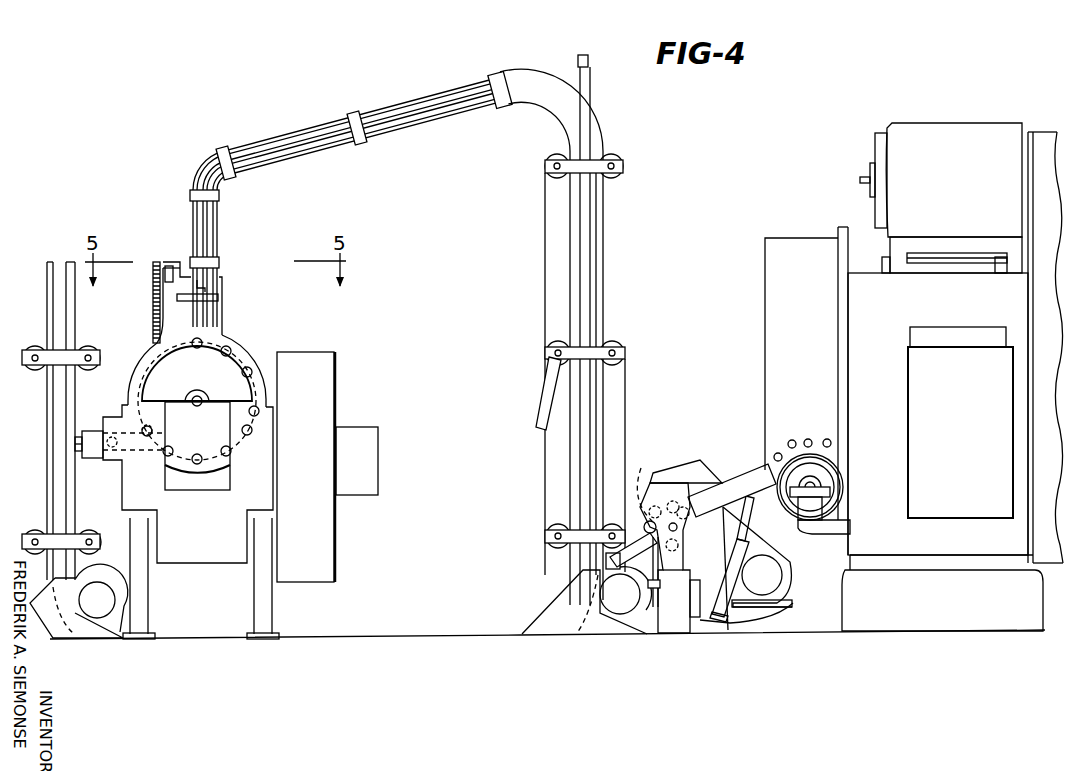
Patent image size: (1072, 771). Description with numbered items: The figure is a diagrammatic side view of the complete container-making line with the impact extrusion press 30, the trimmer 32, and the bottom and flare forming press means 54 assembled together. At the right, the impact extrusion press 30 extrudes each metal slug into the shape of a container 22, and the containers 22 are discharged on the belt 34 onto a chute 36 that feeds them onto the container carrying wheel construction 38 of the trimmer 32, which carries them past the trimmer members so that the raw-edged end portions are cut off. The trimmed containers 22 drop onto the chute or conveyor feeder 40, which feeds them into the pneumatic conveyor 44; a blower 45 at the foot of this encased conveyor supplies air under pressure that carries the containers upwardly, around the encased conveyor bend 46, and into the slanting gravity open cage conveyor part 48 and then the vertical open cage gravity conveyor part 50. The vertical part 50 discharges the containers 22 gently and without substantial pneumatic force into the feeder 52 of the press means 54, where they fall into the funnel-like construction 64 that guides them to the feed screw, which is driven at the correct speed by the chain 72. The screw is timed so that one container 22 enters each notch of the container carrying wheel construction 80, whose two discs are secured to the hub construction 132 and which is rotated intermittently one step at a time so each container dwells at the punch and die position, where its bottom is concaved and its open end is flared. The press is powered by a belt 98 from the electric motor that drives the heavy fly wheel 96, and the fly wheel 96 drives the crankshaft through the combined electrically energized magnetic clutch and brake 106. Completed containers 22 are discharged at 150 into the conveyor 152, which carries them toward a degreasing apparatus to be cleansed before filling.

The container 22 is at (806, 447).
The impact extrusion press 30 is at (776, 294).
The trimmer 32 is at (722, 440).
The belt 34 is at (836, 452).
The chute 36 is at (728, 488).
The container carrying wheel construction 38 is at (686, 530).
The chute or conveyor feeder 40 is at (633, 570).
The pneumatic conveyor 44 is at (588, 294).
The blower 45 is at (613, 601).
The encased conveyor bend 46 is at (555, 100).
The slanting gravity open cage conveyor part 48 is at (390, 105).
The vertical open cage gravity conveyor part 50 is at (207, 236).
The feeder 52 is at (237, 310).
The press means 54 is at (270, 340).
The funnel-like construction 64 is at (225, 269).
The chain 72 is at (154, 310).
The container carrying wheel construction 80 is at (166, 376).
The fly wheel 96 is at (338, 391).
The belt 98 is at (315, 360).
The combined electrically energized magnetic clutch and brake 106 is at (385, 434).
The hub construction 132 is at (196, 394).
The discharge point 150 is at (88, 458).
The conveyor 152 is at (62, 404).